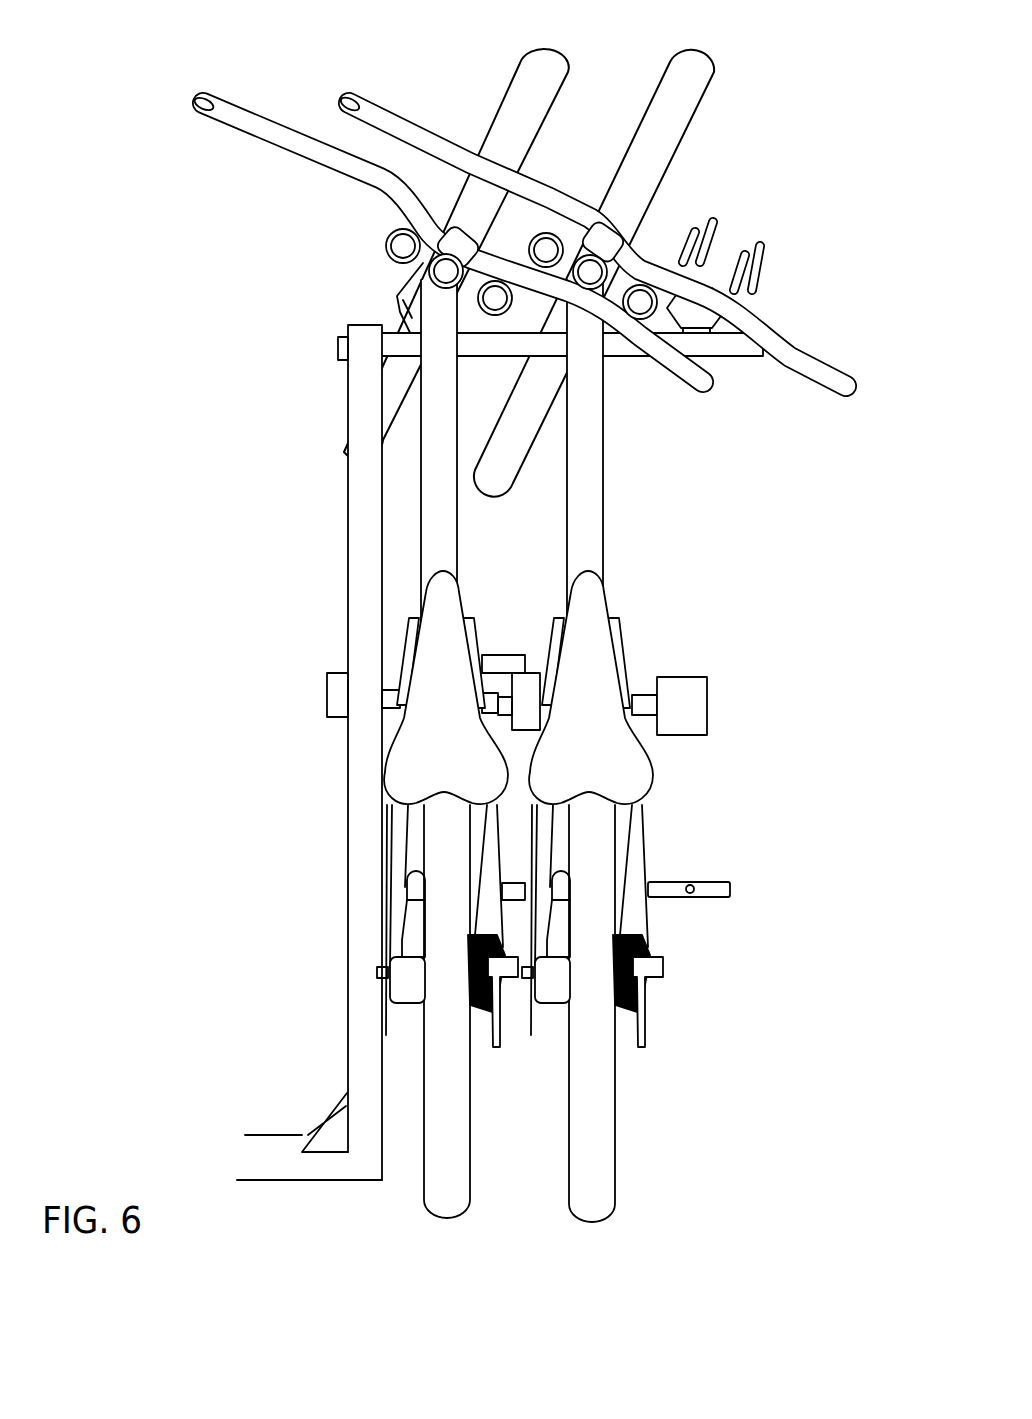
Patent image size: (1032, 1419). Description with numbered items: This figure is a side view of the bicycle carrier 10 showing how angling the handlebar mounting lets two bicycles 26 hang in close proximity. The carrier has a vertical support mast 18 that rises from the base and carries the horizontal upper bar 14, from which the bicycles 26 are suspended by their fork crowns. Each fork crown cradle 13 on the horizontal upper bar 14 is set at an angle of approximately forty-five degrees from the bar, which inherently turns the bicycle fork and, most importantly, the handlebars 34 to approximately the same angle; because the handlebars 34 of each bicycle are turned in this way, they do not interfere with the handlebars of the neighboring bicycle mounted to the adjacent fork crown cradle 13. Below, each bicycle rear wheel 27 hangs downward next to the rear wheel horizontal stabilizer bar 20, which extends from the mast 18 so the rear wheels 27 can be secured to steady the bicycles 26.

The bicycle carrier 10 is at (325, 763).
The fork crown cradle 13 is at (766, 241).
The horizontal upper bar 14 is at (722, 345).
The vertical support mast 18 is at (362, 543).
The rear wheel horizontal stabilizer bar 20 is at (708, 888).
The bicycle 26 is at (613, 525).
The bicycle rear wheel 27 is at (590, 1175).
The handlebars 34 is at (400, 128).